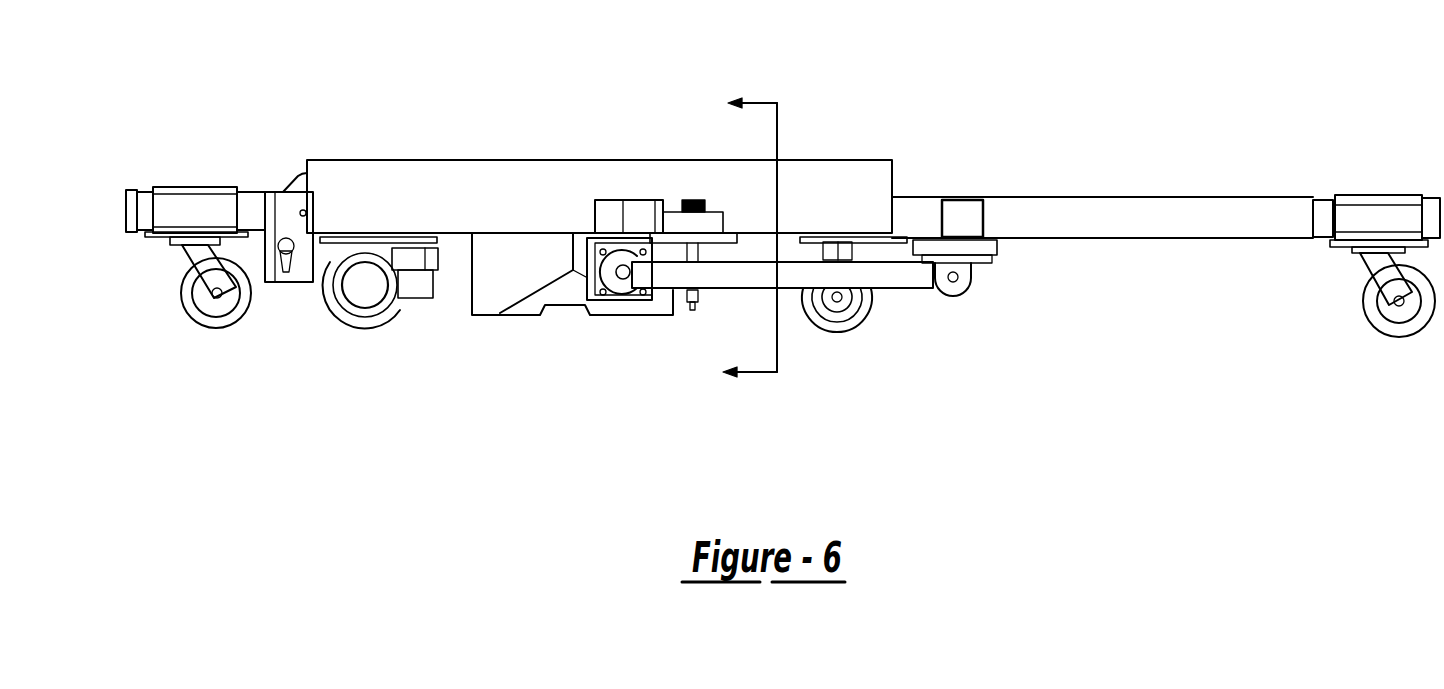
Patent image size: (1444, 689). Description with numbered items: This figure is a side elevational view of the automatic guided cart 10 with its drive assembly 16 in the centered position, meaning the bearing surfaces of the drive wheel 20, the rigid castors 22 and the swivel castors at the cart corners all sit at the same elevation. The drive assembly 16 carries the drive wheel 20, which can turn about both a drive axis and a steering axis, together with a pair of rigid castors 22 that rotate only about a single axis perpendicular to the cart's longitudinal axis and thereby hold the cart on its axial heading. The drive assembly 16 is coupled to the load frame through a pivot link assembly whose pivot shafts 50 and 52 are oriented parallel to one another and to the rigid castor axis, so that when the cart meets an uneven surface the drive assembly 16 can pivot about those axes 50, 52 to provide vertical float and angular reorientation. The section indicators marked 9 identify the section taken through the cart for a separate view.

The AGC 10 is at (783, 238).
The drive assembly 16 is at (576, 154).
The drive wheel 20 is at (370, 317).
The rigid castors 22 is at (848, 322).
The first pivot shaft 50 is at (958, 283).
The pivot shaft 52 is at (623, 277).
The section line 9- 9 is at (741, 239).